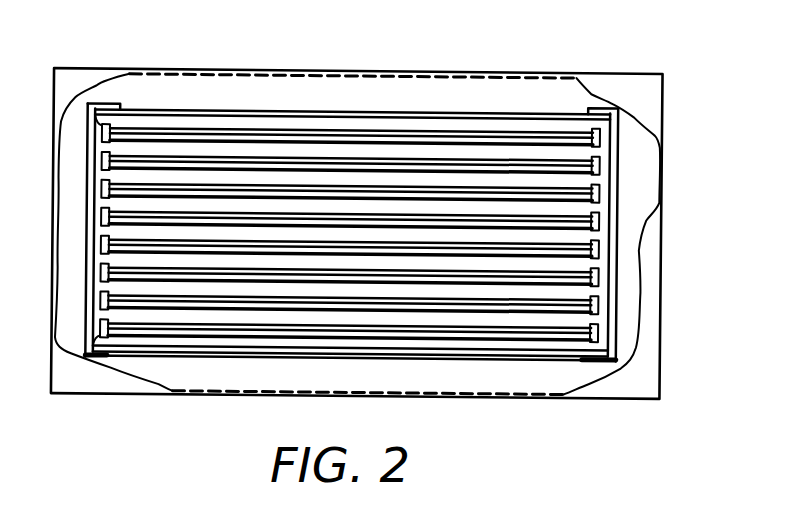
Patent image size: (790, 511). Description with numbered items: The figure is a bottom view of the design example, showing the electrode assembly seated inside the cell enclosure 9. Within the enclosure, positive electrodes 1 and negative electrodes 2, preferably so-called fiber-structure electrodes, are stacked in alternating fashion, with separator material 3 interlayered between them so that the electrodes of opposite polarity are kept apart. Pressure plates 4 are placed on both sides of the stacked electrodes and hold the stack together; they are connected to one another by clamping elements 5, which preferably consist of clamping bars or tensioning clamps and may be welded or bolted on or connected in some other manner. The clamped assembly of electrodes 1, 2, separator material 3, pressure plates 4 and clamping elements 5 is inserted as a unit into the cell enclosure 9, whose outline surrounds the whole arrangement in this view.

The positive electrode 1 is at (112, 154).
The negative electrode 2 is at (106, 123).
The separator material 3 is at (594, 137).
The pressure plate 4 is at (451, 111).
The clamping element 5 is at (83, 252).
The cell enclosure 9 is at (665, 115).